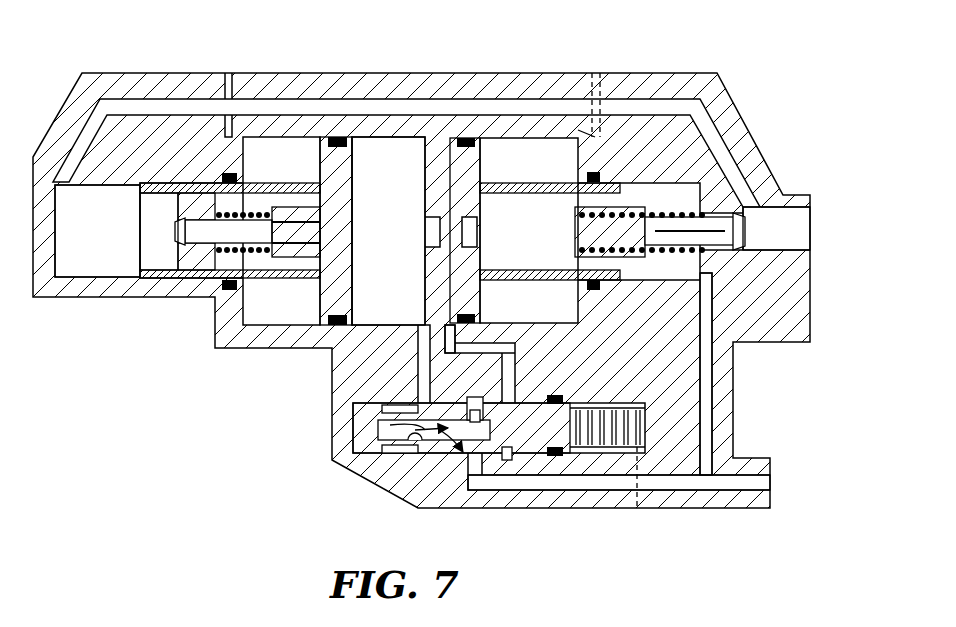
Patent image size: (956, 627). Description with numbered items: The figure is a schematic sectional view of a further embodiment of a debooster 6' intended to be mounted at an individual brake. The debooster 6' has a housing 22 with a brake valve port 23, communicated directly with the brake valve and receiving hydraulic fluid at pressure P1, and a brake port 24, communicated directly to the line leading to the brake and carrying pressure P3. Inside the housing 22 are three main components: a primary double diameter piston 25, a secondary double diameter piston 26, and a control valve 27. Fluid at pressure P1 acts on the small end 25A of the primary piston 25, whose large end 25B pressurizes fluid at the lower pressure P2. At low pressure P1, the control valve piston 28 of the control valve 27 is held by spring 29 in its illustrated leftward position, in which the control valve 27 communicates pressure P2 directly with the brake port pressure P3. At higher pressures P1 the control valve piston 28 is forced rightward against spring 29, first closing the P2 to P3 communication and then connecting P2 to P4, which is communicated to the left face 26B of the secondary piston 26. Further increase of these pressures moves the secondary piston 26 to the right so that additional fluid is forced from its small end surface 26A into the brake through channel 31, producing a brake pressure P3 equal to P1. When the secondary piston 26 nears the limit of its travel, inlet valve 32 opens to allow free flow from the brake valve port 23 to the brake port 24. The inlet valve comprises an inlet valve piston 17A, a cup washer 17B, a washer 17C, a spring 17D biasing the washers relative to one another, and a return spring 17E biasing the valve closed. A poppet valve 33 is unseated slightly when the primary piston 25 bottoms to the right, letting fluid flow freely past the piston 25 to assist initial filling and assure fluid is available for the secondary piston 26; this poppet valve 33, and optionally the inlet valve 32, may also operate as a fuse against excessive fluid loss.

The debooster 6' is at (409, 39).
The housing 22 is at (350, 72).
The brake valve port 23 is at (795, 228).
The brake port 24 is at (770, 482).
The primary double diameter piston 25 is at (298, 160).
The small end 25A is at (158, 245).
The large end 25B is at (355, 165).
The secondary double diameter piston 26 is at (498, 160).
The small end surface 26A is at (690, 197).
The left face 26B is at (447, 158).
The control valve 27 is at (428, 472).
The control valve piston 28 is at (355, 415).
The spring 29 is at (643, 425).
The channel 31 is at (705, 383).
The inlet valve 32 is at (708, 223).
The poppet valve 33 is at (252, 245).
The inlet valve piston 17A is at (737, 213).
The cup washer 17B is at (575, 208).
The washer 17C is at (643, 256).
The spring 17D is at (577, 257).
The return spring 17E is at (670, 213).
The pressure P1 is at (423, 231).
The pressure P2 is at (388, 231).
The pressure P3 is at (728, 481).
The pressure P4 is at (455, 345).